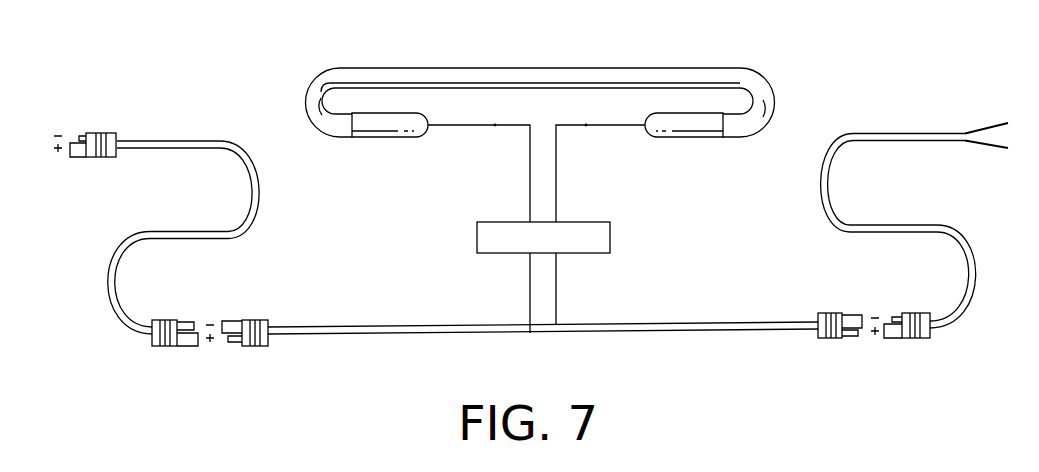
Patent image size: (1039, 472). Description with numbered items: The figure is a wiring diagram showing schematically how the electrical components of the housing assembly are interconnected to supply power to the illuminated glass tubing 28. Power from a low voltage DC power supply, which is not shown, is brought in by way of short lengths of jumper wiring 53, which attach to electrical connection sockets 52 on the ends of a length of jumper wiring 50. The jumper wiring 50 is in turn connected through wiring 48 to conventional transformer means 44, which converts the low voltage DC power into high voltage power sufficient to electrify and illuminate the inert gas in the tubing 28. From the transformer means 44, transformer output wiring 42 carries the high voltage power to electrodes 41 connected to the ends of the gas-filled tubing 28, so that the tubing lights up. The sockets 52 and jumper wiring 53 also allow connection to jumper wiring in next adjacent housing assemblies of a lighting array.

The glass tubing 28 is at (573, 67).
The electrodes 41 is at (402, 138).
The transformer output wiring 42 is at (530, 193).
The transformer means 44 is at (610, 240).
The wiring 48 is at (530, 305).
The jumper wiring 50 is at (363, 334).
The electrical connection sockets 52 is at (248, 348).
The jumper wiring sections 53 is at (232, 238).